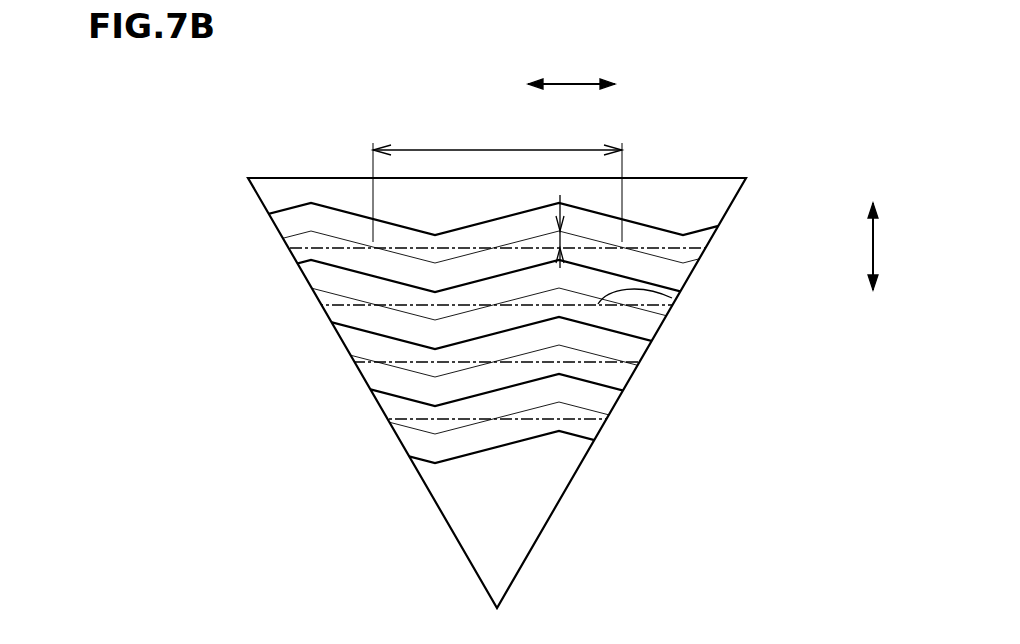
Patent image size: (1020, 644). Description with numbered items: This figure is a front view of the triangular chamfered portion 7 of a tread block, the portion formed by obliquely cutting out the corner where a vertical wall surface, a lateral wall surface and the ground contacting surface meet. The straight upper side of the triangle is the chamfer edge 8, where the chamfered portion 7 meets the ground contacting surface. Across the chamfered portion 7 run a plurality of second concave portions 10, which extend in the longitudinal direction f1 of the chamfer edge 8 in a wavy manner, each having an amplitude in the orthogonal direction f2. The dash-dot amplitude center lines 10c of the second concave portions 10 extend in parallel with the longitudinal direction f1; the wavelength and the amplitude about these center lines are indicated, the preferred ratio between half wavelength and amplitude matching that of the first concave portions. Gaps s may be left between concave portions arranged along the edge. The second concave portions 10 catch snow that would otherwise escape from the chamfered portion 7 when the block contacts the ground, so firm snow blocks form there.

The chamfered portion 7 is at (287, 195).
The chamfer edge 8 is at (343, 177).
The second concave portion 10 is at (695, 242).
The amplitude center line 10c is at (598, 304).
The longitudinal direction f1 is at (571, 70).
The orthogonal direction f2 is at (888, 246).
The gap s is at (480, 517).